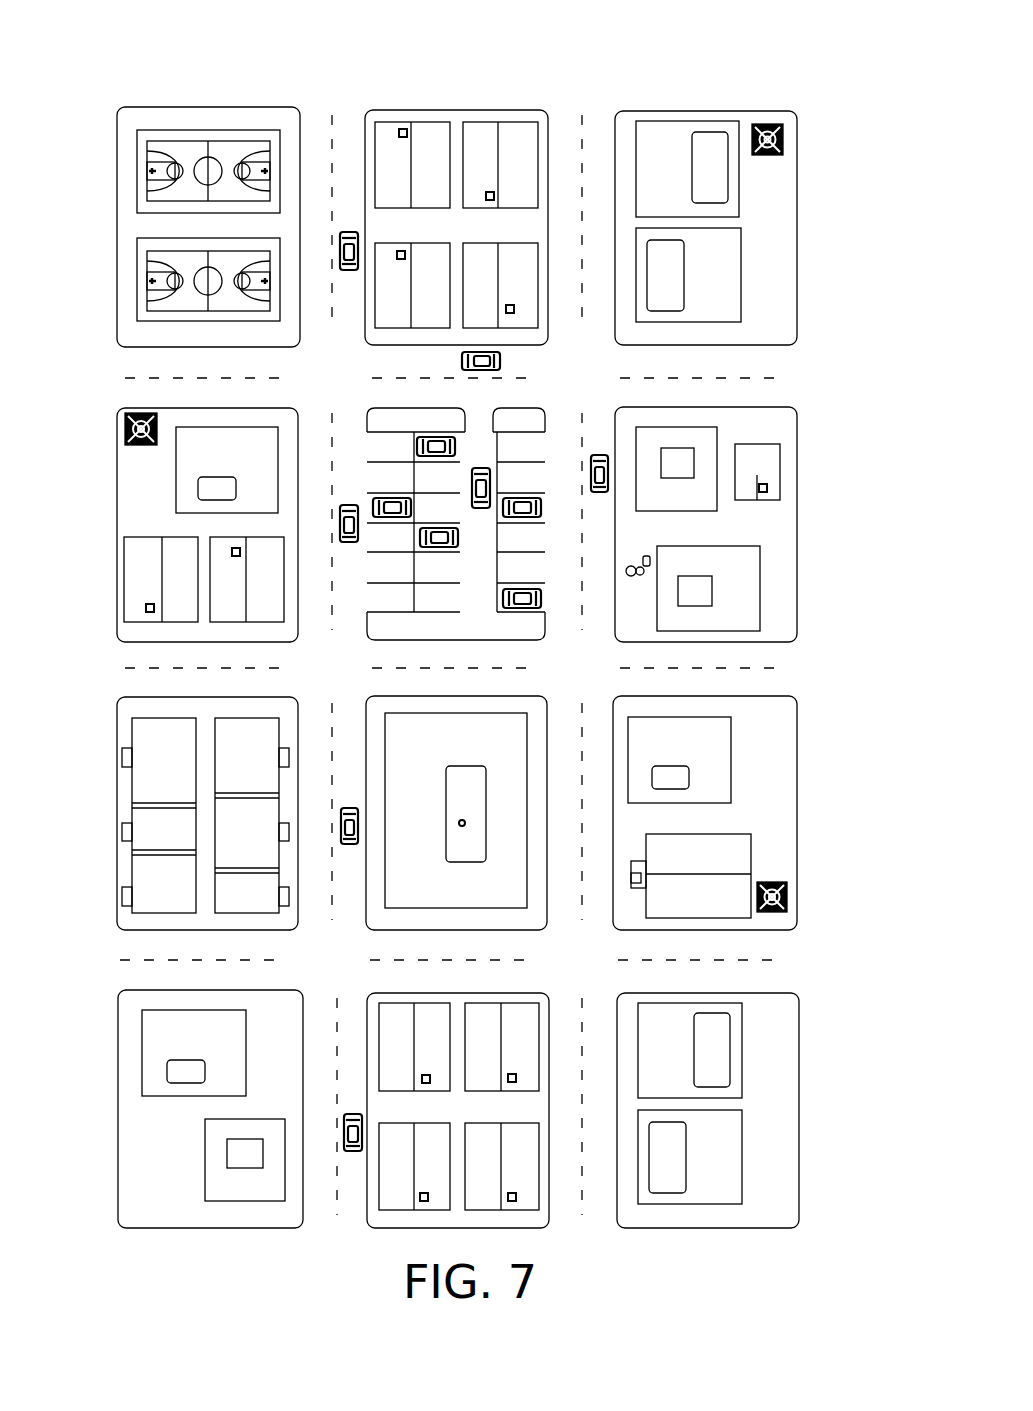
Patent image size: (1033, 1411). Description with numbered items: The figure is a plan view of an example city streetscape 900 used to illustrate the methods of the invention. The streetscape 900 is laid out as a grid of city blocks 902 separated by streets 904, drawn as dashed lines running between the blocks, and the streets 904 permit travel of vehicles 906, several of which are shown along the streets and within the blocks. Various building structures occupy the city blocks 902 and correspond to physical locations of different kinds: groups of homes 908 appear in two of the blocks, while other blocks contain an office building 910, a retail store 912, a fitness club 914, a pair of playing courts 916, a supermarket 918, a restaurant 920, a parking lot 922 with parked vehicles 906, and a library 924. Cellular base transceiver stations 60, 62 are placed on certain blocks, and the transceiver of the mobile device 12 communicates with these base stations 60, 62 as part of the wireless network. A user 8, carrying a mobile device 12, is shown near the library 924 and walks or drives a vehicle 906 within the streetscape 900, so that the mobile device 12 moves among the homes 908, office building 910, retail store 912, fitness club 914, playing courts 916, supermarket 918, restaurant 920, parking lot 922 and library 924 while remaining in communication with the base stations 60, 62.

The city streetscape 900 is at (441, 646).
The city blocks 902 is at (747, 219).
The streets 904 is at (318, 684).
The vehicles 906 is at (462, 362).
The homes 908 is at (505, 135).
The office building 910 is at (169, 1052).
The retail store 912 is at (190, 464).
The fitness club 914 is at (670, 868).
The playing courts 916 is at (140, 267).
The supermarket 918 is at (515, 902).
The restaurant 920 is at (697, 1169).
The parking lot 922 is at (457, 610).
The library 924 is at (716, 604).
The cellular base transceiver station 62 is at (777, 125).
The cellular base transceiver station 60 is at (771, 883).
The user 8 is at (613, 613).
The mobile device 12 is at (636, 578).